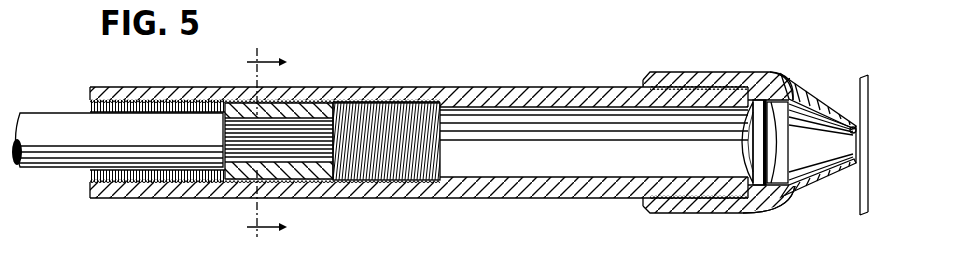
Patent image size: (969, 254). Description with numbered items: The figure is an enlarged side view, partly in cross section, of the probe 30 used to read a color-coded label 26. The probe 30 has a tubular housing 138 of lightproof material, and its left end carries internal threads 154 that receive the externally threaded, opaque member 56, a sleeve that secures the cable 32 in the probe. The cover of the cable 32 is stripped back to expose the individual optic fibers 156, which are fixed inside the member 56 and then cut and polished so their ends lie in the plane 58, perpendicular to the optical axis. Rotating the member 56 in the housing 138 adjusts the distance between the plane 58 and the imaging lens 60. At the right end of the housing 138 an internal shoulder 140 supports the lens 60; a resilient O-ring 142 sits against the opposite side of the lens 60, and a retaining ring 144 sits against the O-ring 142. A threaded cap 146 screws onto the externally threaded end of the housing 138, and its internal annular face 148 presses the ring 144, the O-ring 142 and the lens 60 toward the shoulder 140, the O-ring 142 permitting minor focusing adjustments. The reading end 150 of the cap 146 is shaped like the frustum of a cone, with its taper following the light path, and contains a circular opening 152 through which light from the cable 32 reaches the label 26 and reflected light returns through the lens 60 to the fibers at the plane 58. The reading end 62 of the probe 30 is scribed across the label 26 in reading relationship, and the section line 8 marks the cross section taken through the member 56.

The section line 8- 8 is at (274, 144).
The label 26 is at (863, 78).
The probe 30 is at (417, 75).
The cable 32 is at (55, 132).
The member 56 is at (240, 107).
The plane 58 is at (337, 137).
The imaging lens 60 is at (745, 143).
The reading end 62 is at (851, 170).
The housing 138 is at (527, 95).
The shoulder 140 is at (753, 213).
The O-ring 142 is at (767, 188).
The retaining ring 144 is at (796, 202).
The cap 146 is at (732, 84).
The annular face 148 is at (793, 98).
The reading end 150 is at (836, 166).
The opening 152 is at (855, 127).
The internal threads 154 is at (398, 106).
The optic fibers 156 is at (272, 145).